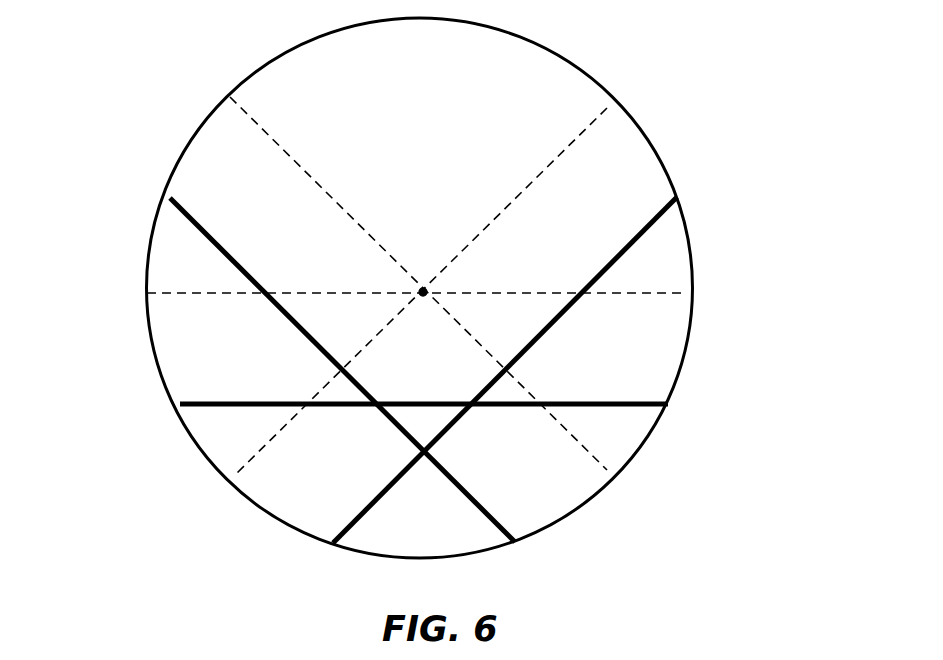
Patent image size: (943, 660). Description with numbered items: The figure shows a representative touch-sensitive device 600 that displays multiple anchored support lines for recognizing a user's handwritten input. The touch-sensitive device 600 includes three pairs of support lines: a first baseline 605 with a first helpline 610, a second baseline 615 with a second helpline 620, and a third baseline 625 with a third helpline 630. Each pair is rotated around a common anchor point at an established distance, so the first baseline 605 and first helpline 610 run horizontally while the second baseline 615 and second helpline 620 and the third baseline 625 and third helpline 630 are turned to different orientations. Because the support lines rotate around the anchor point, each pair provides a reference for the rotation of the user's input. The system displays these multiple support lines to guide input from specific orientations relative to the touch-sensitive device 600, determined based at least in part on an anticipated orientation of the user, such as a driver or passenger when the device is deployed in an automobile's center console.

The touch-sensitive device 600 is at (690, 114).
The first baseline 605 is at (650, 407).
The first helpline 610 is at (670, 295).
The second baseline 615 is at (361, 509).
The second helpline 620 is at (235, 471).
The third baseline 625 is at (171, 199).
The third helpline 630 is at (250, 118).